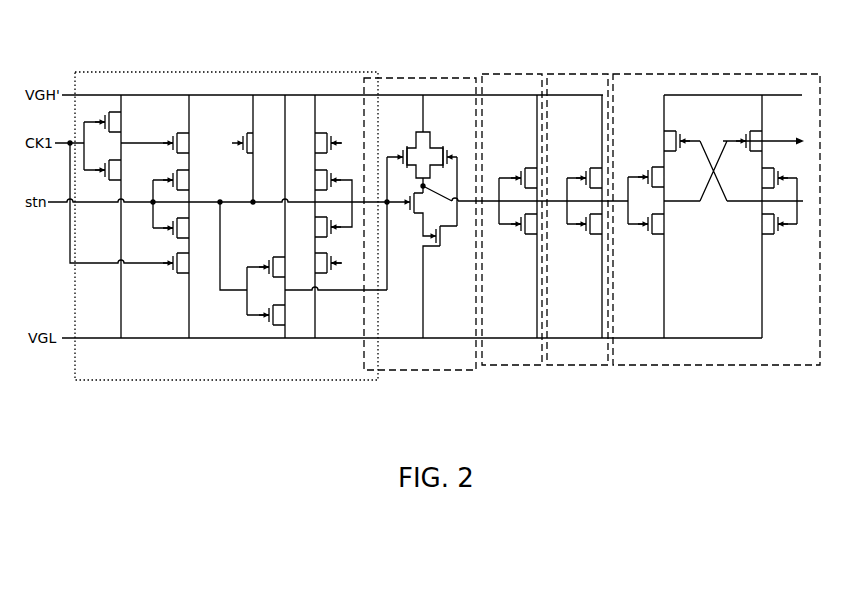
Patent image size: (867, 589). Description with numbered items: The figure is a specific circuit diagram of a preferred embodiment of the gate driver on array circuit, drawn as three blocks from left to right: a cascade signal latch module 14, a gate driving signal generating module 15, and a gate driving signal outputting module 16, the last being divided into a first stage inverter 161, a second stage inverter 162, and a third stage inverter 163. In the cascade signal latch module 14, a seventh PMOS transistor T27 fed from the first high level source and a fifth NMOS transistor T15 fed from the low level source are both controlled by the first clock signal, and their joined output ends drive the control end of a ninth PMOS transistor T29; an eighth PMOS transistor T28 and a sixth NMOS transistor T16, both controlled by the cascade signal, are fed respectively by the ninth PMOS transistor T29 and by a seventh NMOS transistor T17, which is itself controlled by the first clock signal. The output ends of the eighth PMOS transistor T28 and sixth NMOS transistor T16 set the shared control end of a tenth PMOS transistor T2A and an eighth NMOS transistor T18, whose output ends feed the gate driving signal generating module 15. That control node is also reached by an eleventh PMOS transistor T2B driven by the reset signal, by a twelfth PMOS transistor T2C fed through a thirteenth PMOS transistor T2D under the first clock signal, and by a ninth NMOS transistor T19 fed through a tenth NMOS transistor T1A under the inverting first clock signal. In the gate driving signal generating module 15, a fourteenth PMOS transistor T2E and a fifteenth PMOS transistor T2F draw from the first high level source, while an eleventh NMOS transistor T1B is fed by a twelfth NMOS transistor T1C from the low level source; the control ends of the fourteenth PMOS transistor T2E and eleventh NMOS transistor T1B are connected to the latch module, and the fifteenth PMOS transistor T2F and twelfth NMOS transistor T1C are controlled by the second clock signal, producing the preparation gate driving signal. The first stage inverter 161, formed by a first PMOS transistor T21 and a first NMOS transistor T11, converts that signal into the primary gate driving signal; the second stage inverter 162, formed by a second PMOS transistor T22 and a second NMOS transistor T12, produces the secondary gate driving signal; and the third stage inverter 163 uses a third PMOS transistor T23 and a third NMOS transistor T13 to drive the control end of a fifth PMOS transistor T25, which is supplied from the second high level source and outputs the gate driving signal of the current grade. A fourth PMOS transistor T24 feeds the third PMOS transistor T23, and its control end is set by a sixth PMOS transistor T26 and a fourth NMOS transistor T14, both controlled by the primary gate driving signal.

The cascade signal latch module 14 is at (228, 212).
The gate driving signal generating module 15 is at (428, 209).
The gate driving signal outputting module 16 is at (647, 187).
The first stage inverter 161 is at (535, 206).
The second stage inverter 162 is at (598, 206).
The third stage inverter 163 is at (724, 206).
The seventh PMOS transistor T27 is at (120, 122).
The fifth NMOS transistor T15 is at (120, 170).
The ninth PMOS transistor T29 is at (174, 134).
The eighth PMOS transistor T28 is at (190, 180).
The sixth NMOS transistor T16 is at (190, 228).
The seventh NMOS transistor T17 is at (190, 263).
The tenth PMOS transistor T2A is at (264, 258).
The eighth NMOS transistor T18 is at (286, 315).
The eleventh PMOS transistor T2B is at (260, 143).
The thirteenth PMOS transistor T2D is at (316, 143).
The twelfth PMOS transistor T2C is at (316, 180).
The ninth NMOS transistor T19 is at (317, 227).
The tenth NMOS transistor T1A is at (316, 263).
The fourteenth PMOS transistor T2E is at (393, 146).
The fifteenth PMOS transistor T2F is at (448, 146).
The eleventh NMOS transistor T1B is at (413, 214).
The twelfth NMOS transistor T1C is at (442, 282).
The first PMOS transistor T21 is at (512, 172).
The first NMOS transistor T11 is at (512, 231).
The second PMOS transistor T22 is at (577, 172).
The second NMOS transistor T12 is at (580, 233).
The third PMOS transistor T23 is at (639, 173).
The third NMOS transistor T13 is at (644, 233).
The fourth PMOS transistor T24 is at (683, 133).
The fifth PMOS transistor T25 is at (738, 135).
The sixth PMOS transistor T26 is at (761, 178).
The fourth NMOS transistor T14 is at (759, 224).